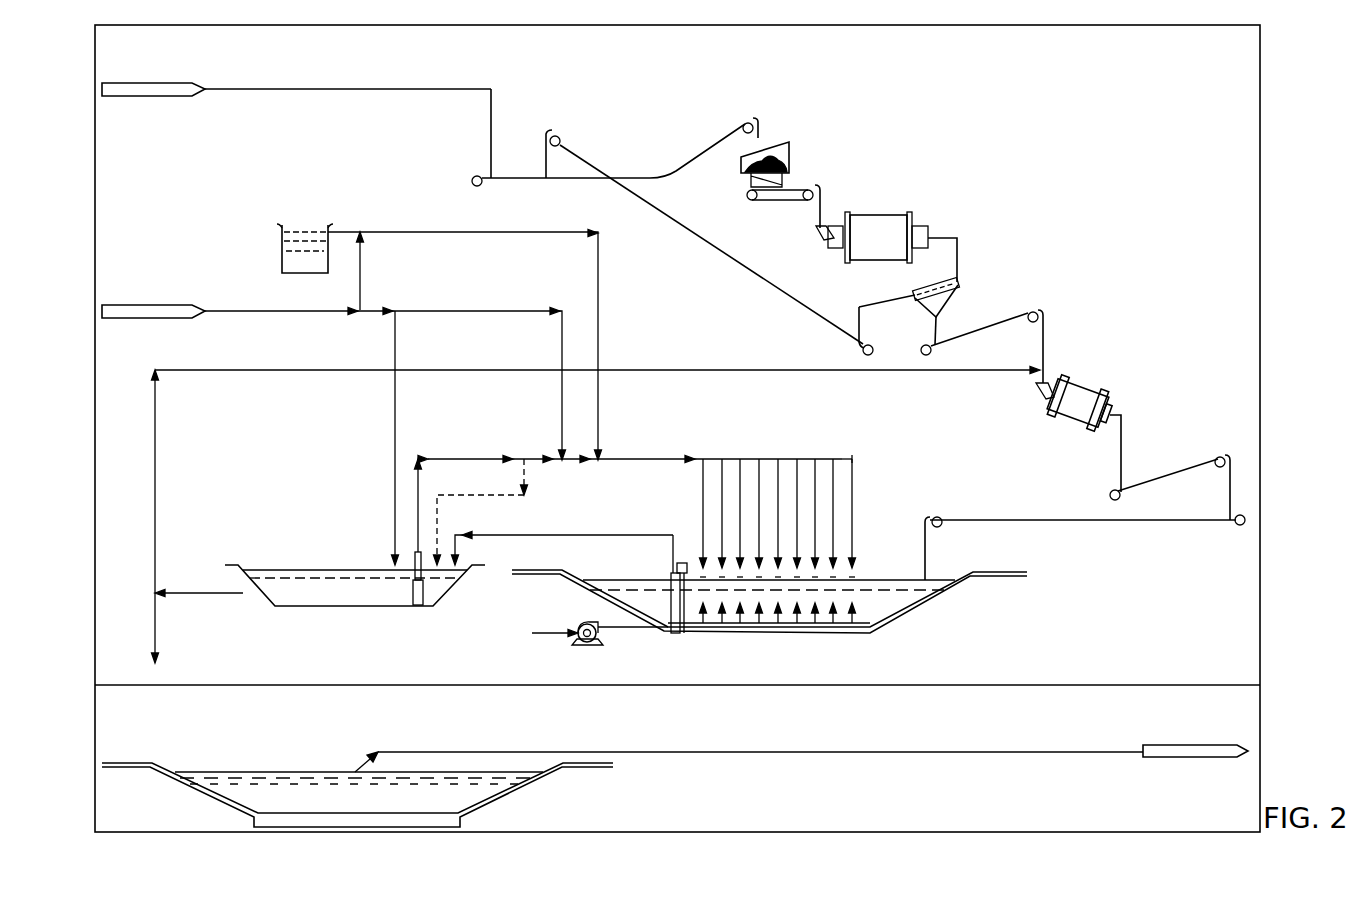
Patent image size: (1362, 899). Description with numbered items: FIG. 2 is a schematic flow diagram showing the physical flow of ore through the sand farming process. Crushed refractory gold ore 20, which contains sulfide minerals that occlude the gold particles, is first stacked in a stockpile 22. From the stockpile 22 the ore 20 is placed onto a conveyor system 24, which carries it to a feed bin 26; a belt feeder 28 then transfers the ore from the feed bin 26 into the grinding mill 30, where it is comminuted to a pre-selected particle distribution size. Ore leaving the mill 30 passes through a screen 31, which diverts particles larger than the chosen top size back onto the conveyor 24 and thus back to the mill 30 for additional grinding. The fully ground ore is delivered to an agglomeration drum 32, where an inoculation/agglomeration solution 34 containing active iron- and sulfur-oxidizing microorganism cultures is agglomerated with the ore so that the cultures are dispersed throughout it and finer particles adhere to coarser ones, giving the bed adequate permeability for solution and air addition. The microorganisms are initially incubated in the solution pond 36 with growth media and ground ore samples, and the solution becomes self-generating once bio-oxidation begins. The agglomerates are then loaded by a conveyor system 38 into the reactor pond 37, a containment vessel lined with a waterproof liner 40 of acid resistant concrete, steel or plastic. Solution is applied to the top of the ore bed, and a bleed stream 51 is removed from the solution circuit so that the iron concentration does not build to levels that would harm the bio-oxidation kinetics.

The crushed refractory gold ore 20 is at (174, 64).
The stockpile 22 is at (162, 95).
The conveyor system 24 is at (505, 179).
The feed bin 26 is at (776, 146).
The belt feeder 28 is at (795, 190).
The grinding mill 30 is at (873, 222).
The screen 31 is at (958, 292).
The agglomeration drum 32 is at (1078, 386).
The inoculation/agglomeration solution 34 is at (214, 374).
The solution pond 36 is at (393, 597).
The reactor pond 37 is at (883, 600).
The conveyor system 38 is at (1180, 470).
The waterproof liner 40 is at (208, 797).
The bleed stream 51 is at (157, 662).